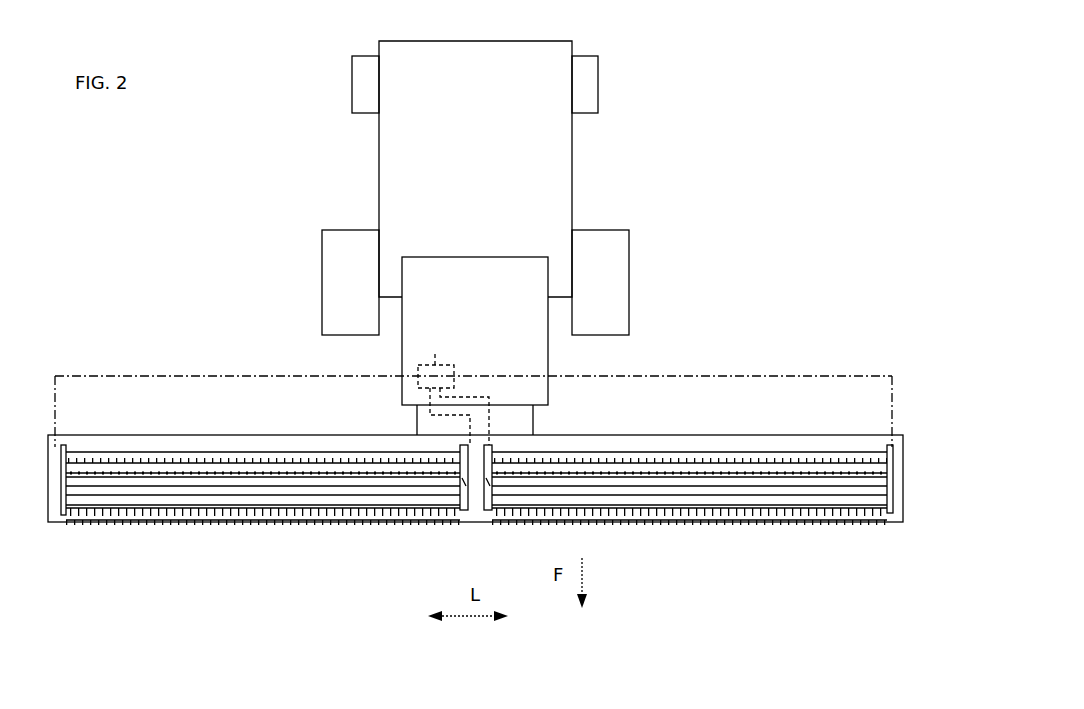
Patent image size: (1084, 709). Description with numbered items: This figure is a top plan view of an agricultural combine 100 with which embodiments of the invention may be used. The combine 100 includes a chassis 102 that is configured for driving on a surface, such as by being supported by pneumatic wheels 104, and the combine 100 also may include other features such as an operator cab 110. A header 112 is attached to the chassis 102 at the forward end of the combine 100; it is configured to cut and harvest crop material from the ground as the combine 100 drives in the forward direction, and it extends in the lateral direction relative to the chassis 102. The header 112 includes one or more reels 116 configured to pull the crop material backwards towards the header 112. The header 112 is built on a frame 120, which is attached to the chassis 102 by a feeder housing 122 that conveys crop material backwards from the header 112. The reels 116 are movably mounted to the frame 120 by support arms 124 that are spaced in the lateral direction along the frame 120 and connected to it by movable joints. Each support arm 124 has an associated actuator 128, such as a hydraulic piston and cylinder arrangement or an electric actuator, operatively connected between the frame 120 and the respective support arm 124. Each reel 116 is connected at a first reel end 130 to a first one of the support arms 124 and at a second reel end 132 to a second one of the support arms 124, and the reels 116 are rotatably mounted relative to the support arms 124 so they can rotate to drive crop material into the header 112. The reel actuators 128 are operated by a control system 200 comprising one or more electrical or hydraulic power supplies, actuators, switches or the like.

The agricultural combine 100 is at (238, 184).
The chassis 102 is at (557, 163).
The pneumatic wheels 104 is at (590, 87).
The operator cab 110 is at (525, 340).
The header 112 is at (298, 424).
The reels 116 is at (297, 523).
The frame 120 is at (790, 443).
The feeder housing 122 is at (522, 420).
The support arms 124 is at (903, 495).
The actuator 128 is at (893, 458).
The first reel end 130 is at (868, 525).
The second reel end 132 is at (513, 522).
The control system 200 is at (438, 352).